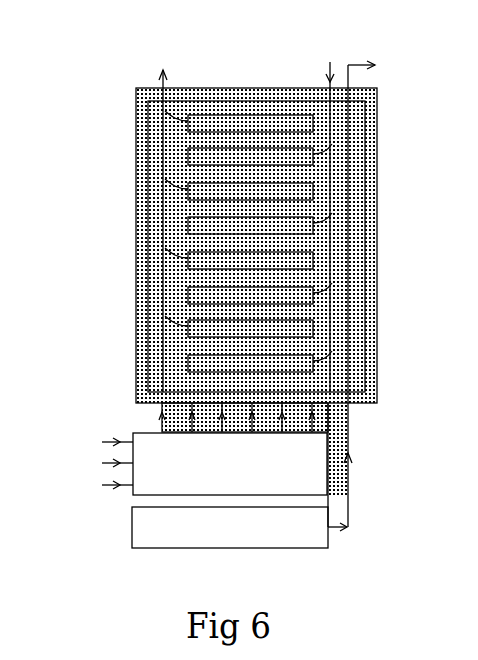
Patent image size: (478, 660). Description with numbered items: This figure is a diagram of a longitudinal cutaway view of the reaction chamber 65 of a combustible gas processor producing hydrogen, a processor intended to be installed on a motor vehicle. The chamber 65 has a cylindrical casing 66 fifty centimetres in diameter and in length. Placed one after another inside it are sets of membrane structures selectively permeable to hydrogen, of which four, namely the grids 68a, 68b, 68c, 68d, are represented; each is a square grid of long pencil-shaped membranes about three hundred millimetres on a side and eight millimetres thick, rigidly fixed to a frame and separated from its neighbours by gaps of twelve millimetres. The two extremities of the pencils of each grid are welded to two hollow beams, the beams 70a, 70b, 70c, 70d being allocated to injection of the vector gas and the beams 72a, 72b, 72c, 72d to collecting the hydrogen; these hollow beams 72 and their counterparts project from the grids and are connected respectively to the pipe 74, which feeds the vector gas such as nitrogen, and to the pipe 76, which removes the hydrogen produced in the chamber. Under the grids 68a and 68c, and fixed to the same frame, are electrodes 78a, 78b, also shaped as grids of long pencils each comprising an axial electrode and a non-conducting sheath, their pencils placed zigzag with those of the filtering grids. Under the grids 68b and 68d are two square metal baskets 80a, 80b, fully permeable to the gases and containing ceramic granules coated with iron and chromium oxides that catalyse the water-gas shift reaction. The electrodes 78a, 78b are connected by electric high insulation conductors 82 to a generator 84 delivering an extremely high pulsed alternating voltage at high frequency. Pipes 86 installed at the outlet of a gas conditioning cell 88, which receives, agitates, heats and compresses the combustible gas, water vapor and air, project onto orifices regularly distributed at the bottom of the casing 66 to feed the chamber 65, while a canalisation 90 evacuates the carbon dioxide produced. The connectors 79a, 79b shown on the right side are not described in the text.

The reaction chamber 65 is at (45, 191).
The cylindrical casing 66 is at (140, 108).
The membrane structure set 68a is at (188, 355).
The membrane structure set 68b is at (188, 262).
The membrane structure set 68c is at (287, 190).
The membrane structure set 68d is at (186, 124).
The hollow beam 70a is at (370, 342).
The hollow beam 70b is at (370, 263).
The hollow beam 70c is at (360, 172).
The hollow beam 70d is at (315, 118).
The hollow beams 72 is at (140, 298).
The hollow beam 72a is at (188, 330).
The hollow beam 72b is at (200, 258).
The hollow beam 72c is at (215, 193).
The hollow beam 72d is at (140, 93).
The vector gas pipe 74 is at (330, 62).
The hydrogen removal pipe 76 is at (157, 78).
The electrode 78a is at (170, 372).
The electrode 78b is at (175, 222).
The connector 79a is at (375, 378).
The connector 79b is at (370, 222).
The metal basket 80a is at (370, 290).
The metal basket 80b is at (360, 137).
The electric high insulation conductors 82 is at (350, 445).
The generator 84 is at (315, 548).
The pipes 86 is at (162, 420).
The gas conditioning cell 88 is at (313, 478).
The canalisation 90 is at (349, 62).